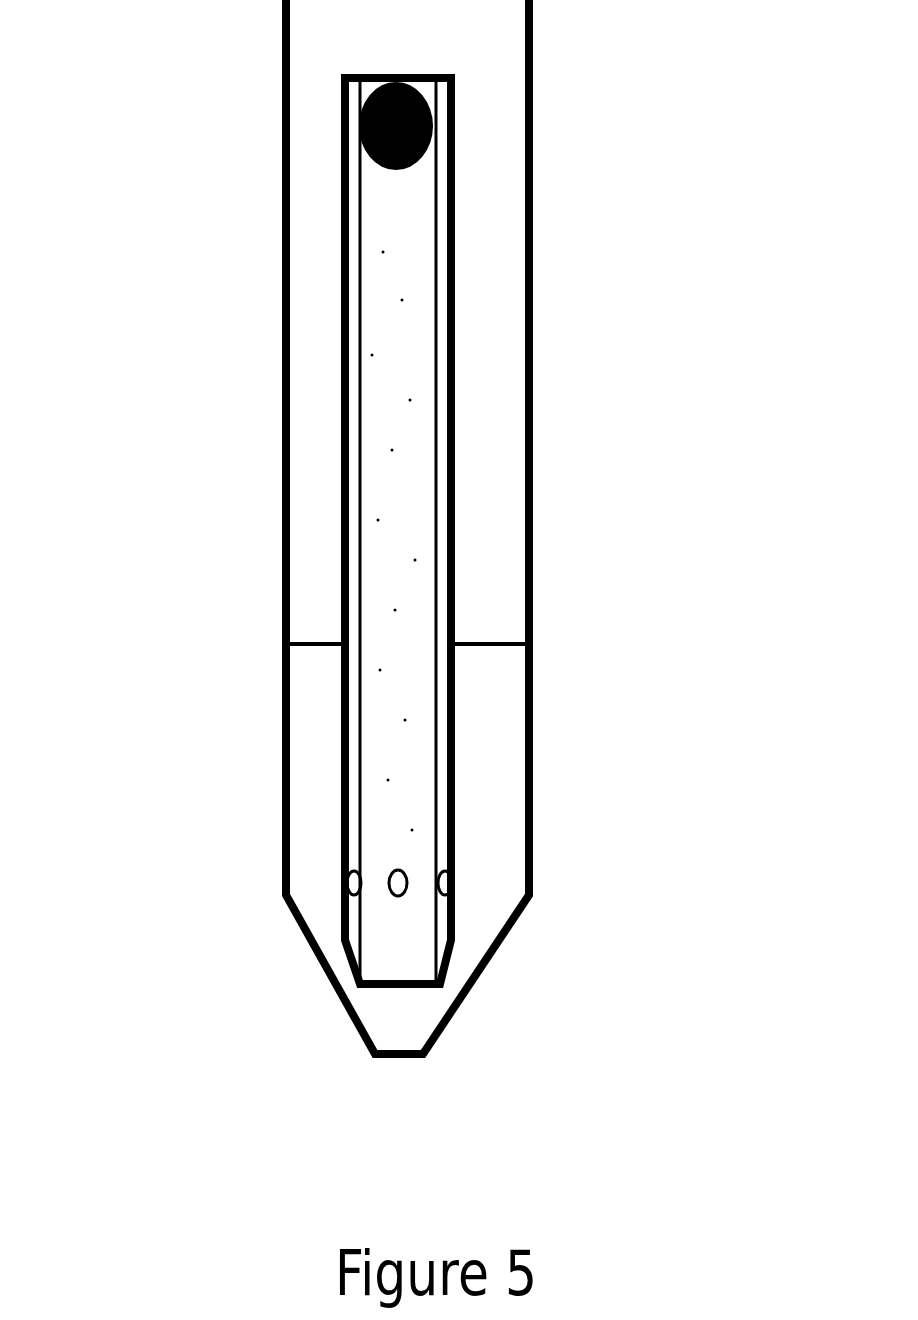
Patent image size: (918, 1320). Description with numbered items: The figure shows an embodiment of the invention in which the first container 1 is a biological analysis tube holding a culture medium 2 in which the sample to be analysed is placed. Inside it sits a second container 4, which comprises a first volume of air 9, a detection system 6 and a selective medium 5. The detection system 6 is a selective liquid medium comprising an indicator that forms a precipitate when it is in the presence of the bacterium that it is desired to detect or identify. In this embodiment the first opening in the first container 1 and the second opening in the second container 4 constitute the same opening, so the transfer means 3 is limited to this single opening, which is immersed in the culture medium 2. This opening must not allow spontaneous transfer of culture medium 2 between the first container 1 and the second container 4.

The first container 1 is at (548, 892).
The culture medium 2 is at (516, 808).
The transfer means 3 is at (327, 886).
The second container 4 is at (475, 203).
The selective medium 5 is at (455, 530).
The detection system 6 is at (340, 128).
The first volume of air 9 is at (330, 348).